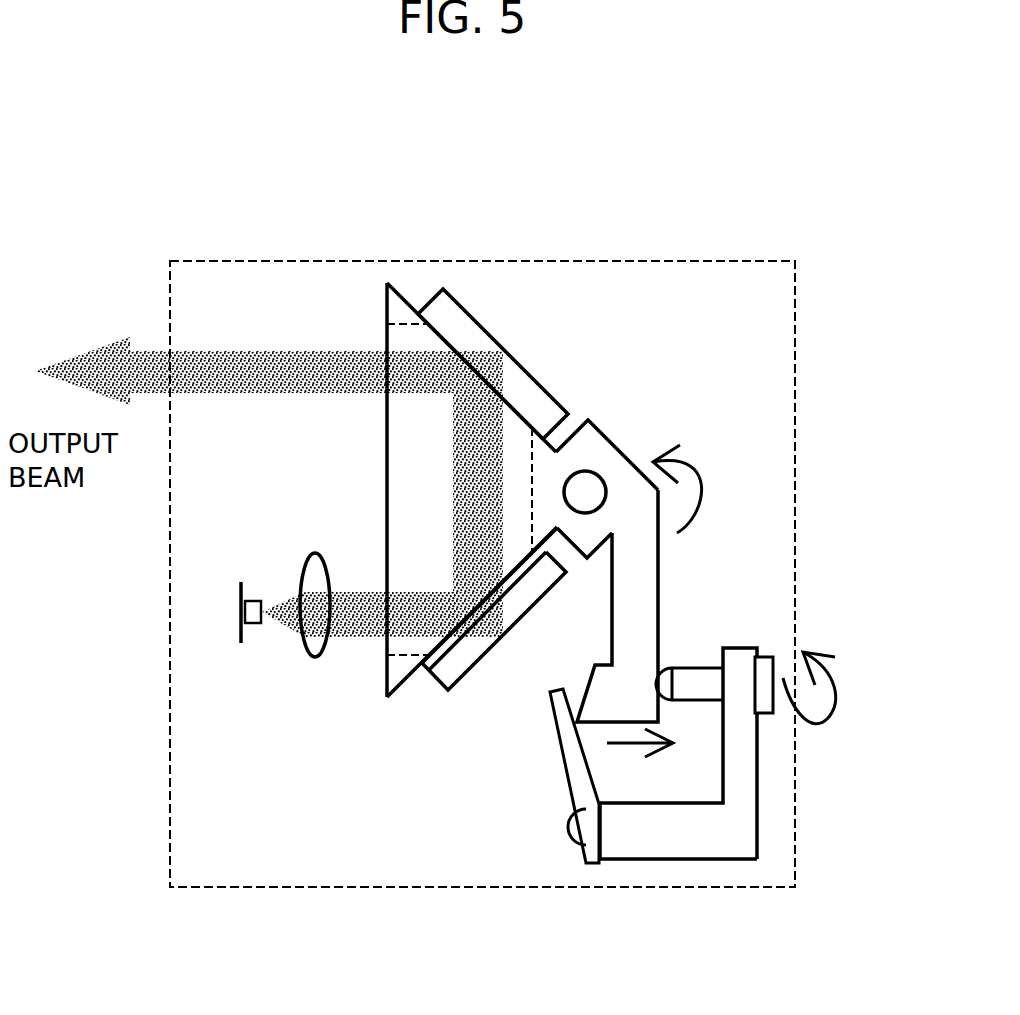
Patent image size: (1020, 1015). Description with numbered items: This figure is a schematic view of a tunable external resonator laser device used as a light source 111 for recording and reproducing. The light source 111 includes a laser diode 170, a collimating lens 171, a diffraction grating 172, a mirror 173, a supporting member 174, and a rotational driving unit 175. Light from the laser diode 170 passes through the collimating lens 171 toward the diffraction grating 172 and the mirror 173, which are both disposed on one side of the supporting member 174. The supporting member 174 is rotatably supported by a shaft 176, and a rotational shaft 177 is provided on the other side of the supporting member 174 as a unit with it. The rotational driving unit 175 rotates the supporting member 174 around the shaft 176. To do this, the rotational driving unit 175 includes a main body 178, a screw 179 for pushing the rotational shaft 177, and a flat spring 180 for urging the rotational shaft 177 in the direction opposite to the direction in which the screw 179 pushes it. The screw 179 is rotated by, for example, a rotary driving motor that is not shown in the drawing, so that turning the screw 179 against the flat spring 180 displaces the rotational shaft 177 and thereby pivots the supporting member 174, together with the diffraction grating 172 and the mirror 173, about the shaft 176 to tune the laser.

The light source 111 is at (500, 262).
The laser diode 170 is at (237, 620).
The collimating lens 171 is at (312, 647).
The diffraction grating 172 is at (457, 672).
The mirror 173 is at (543, 386).
The supporting member 174 is at (588, 428).
The rotational driving unit 175 is at (742, 753).
The shaft 176 is at (588, 496).
The rotational shaft 177 is at (637, 587).
The main body 178 is at (682, 848).
The screw 179 is at (765, 672).
The flat spring 180 is at (561, 736).